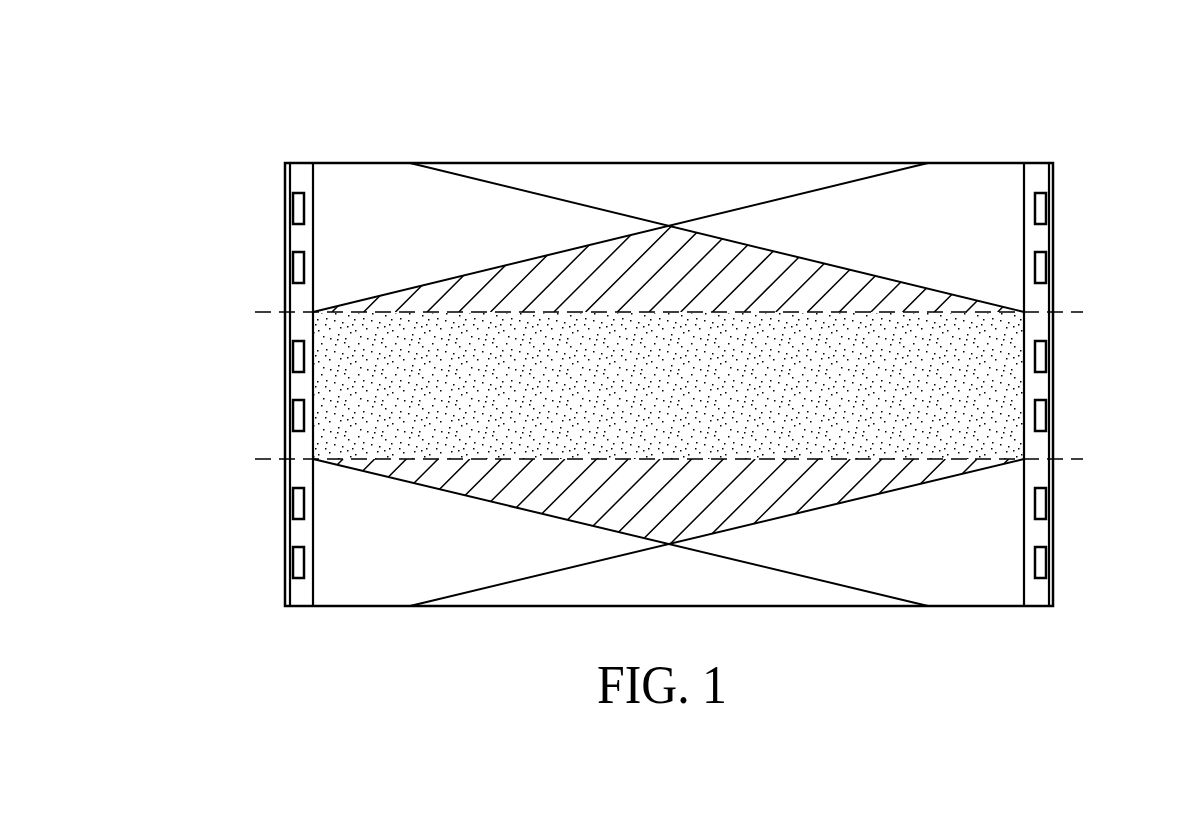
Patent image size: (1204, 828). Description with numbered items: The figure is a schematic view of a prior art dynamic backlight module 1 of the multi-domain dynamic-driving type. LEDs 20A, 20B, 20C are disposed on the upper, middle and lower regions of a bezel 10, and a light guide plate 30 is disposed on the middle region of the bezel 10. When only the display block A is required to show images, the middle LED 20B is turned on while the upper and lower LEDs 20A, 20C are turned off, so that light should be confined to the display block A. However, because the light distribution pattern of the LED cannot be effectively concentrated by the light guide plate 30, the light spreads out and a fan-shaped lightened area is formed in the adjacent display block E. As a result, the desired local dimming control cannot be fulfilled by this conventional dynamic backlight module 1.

The dynamic backlight module 1 is at (235, 74).
The bezel 10 is at (848, 163).
The light guide plate 30 is at (373, 193).
The LED 20A is at (609, 238).
The LED 20B is at (609, 386).
The LED 20C is at (610, 533).
The display block E is at (930, 297).
The display block A is at (965, 383).